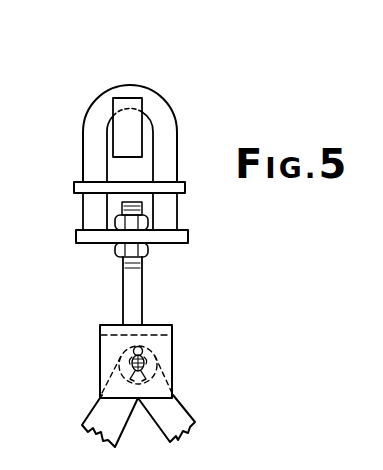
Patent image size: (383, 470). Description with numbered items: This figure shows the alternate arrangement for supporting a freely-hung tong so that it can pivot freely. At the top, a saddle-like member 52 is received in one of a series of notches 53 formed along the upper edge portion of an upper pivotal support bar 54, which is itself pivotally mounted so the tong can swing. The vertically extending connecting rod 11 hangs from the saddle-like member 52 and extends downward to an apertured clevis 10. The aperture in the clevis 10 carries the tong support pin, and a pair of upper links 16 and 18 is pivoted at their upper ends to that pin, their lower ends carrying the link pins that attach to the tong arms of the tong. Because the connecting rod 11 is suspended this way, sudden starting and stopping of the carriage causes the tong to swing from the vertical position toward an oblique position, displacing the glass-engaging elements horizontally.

The apertured clevis 10 is at (100, 342).
The vertically extending connecting rod 11 is at (123, 287).
The upper link 16 is at (177, 413).
The upper link 18 is at (93, 412).
The saddle-like member 52 is at (83, 152).
The notch 53 is at (128, 112).
The upper pivotal support bar 54 is at (140, 132).